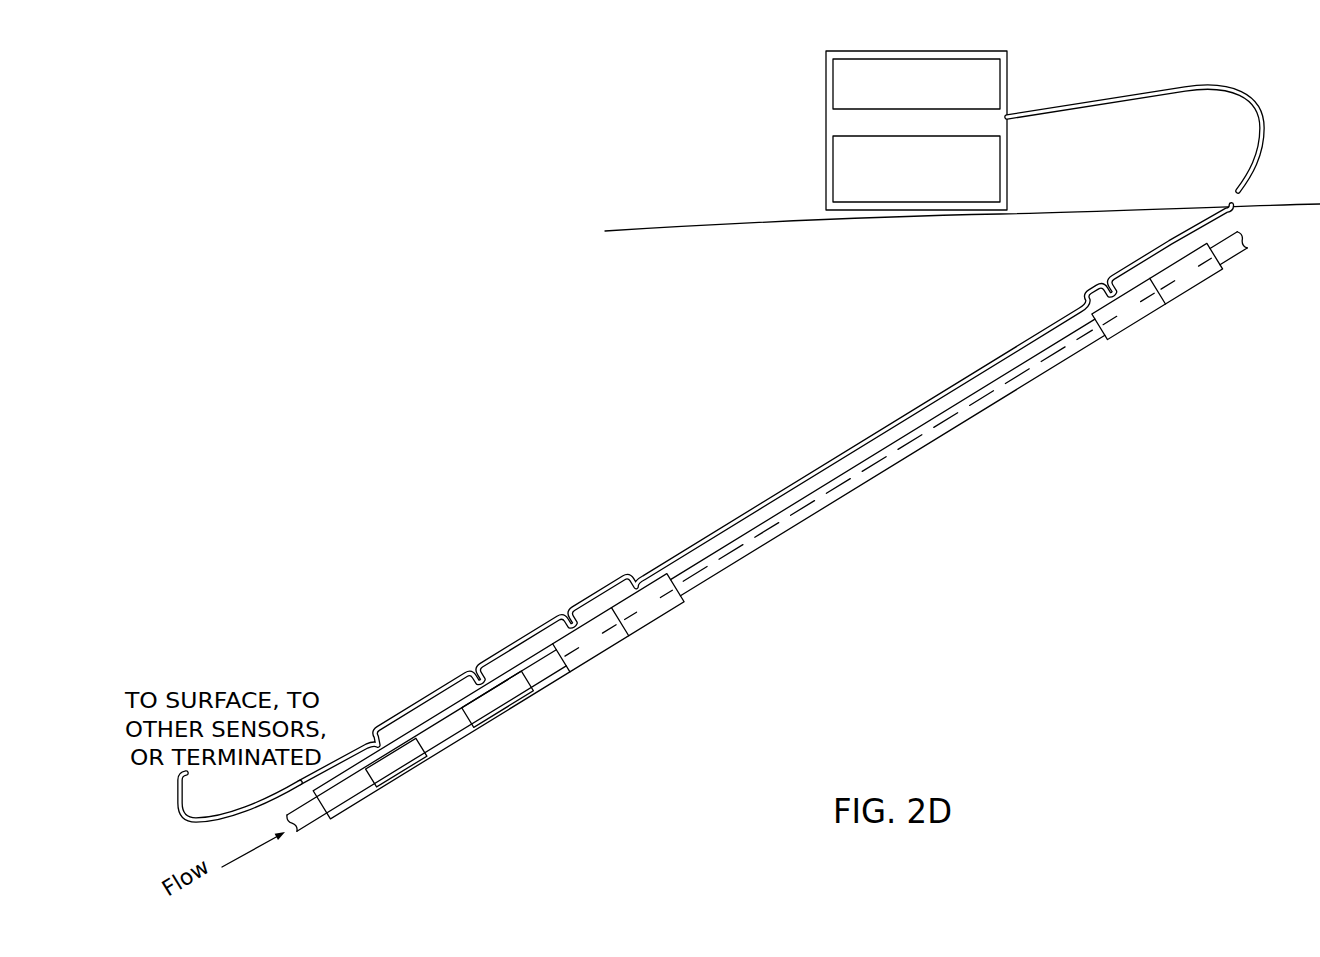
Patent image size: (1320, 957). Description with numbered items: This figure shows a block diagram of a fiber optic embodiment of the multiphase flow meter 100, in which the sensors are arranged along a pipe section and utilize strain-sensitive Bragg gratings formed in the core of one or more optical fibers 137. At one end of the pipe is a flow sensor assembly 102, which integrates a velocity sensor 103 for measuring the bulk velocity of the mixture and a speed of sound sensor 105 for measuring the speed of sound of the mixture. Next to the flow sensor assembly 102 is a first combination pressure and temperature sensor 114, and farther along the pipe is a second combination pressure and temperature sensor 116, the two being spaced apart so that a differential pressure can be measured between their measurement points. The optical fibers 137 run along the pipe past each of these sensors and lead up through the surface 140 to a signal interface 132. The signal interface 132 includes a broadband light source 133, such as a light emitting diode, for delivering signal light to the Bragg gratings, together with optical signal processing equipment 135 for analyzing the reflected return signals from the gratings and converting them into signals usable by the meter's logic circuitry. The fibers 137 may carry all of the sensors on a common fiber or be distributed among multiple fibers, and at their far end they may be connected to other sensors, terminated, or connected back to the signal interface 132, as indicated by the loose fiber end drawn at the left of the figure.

The multiphase flow meter 100 is at (716, 525).
The flow sensor assembly 102 is at (460, 750).
The velocity sensor 103 is at (390, 788).
The speed of sound sensor 105 is at (525, 704).
The combination pressure and temperature sensor 114 is at (620, 657).
The combination pressure and temperature sensor 116 is at (1166, 328).
The signal interface 132 is at (1009, 126).
The broadband light source 133 is at (826, 86).
The optical signal processing equipment 135 is at (830, 170).
The optical fibers 137 is at (872, 428).
The surface / sea floor 140 is at (651, 224).